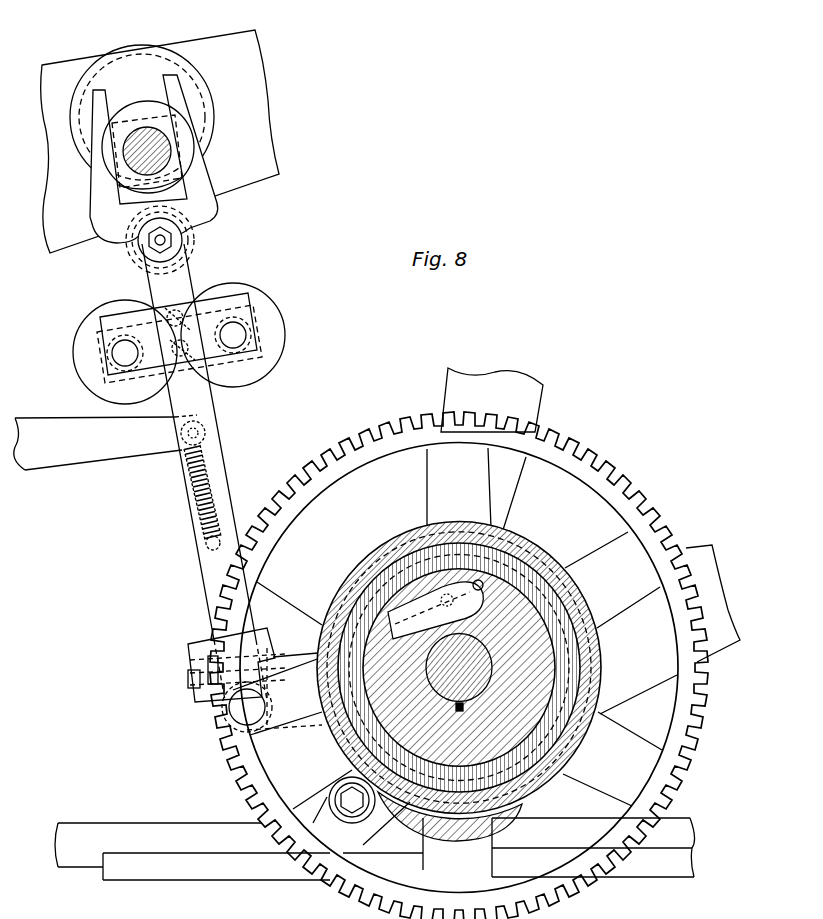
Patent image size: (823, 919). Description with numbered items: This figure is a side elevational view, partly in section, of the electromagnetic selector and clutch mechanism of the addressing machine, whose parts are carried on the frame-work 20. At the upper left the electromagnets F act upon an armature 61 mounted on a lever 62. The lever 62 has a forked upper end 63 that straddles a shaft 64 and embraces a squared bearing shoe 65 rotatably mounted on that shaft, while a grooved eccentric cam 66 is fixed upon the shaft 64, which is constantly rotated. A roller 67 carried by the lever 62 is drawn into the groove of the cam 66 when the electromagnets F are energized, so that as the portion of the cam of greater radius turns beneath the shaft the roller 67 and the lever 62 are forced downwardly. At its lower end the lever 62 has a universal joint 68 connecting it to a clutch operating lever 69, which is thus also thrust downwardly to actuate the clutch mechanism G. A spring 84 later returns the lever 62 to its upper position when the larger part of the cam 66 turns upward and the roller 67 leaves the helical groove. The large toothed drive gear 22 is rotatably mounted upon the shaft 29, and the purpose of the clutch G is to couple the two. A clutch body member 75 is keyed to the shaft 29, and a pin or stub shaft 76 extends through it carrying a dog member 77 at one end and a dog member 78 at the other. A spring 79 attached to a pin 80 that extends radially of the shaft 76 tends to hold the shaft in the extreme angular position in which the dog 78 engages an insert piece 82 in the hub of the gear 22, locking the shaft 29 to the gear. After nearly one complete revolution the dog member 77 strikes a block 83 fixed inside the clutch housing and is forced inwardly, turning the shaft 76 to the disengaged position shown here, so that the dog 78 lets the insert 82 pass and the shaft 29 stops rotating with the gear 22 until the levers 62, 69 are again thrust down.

The frame-work 20 is at (535, 400).
The drive gear 22 is at (376, 432).
The shaft 29 is at (463, 670).
The armature 61 is at (230, 298).
The lever 62 is at (205, 412).
The forked upper end 63 is at (213, 190).
The shaft 64 is at (175, 139).
The squared bearing shoe 65 is at (152, 118).
The grooved eccentric cam 66 is at (147, 62).
The roller 67 is at (186, 246).
The universal joint 68 is at (182, 684).
The clutch operating lever 69 is at (247, 735).
The clutch body member 75 is at (582, 603).
The pin or stub shaft 76 is at (478, 580).
The dog member 77 is at (372, 556).
The dog member 78 is at (435, 610).
The spring 79 is at (552, 552).
The pin 80 is at (432, 540).
The insert piece 82 is at (505, 806).
The block 83 is at (346, 582).
The spring 84 is at (195, 485).
The electromagnets F is at (270, 305).
The clutch mechanism G is at (543, 538).